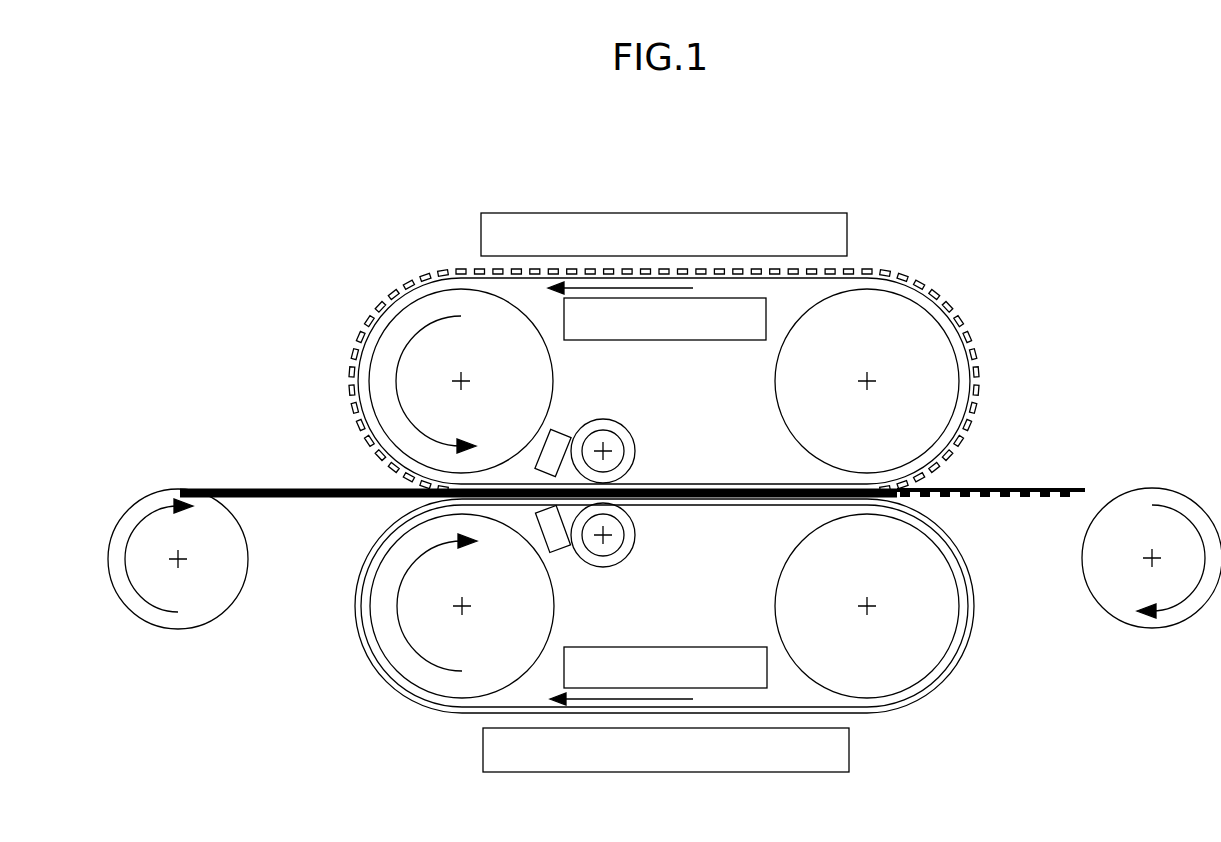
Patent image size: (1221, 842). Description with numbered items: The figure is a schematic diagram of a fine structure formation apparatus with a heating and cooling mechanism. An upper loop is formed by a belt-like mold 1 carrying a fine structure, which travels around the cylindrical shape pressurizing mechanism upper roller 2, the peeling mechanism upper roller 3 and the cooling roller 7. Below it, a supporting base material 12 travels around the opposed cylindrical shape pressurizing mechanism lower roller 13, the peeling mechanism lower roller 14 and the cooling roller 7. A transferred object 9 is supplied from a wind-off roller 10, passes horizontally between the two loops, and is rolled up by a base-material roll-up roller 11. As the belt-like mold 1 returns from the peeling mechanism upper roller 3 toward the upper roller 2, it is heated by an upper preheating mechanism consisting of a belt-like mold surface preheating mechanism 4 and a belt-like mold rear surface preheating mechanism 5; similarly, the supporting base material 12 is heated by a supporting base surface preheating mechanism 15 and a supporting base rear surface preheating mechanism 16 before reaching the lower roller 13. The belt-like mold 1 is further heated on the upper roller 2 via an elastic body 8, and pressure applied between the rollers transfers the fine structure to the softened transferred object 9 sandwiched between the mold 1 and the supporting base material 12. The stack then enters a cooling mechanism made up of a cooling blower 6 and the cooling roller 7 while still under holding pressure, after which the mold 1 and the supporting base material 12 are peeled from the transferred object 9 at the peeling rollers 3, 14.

The belt-like mold 1 is at (858, 268).
The cylindrical shape pressurizing mechanism upper roller 2 is at (427, 313).
The peeling mechanism upper roller 3 is at (901, 310).
The belt-like mold surface preheating mechanism 4 is at (660, 222).
The belt-like mold rear surface preheating mechanism 5 is at (708, 333).
The cooling blower 6 is at (560, 440).
The cooling roller 7 is at (607, 426).
The elastic body 8 is at (373, 343).
The transferred object 9 is at (282, 487).
The wind-off roller 10 is at (177, 629).
The base-material roll-up roller 11 is at (1153, 628).
The supporting base material 12 is at (855, 708).
The cylindrical shape pressurizing mechanism lower roller 13 is at (428, 675).
The peeling mechanism lower roller 14 is at (903, 675).
The supporting base surface preheating mechanism 15 is at (663, 765).
The supporting base rear surface preheating mechanism 16 is at (711, 650).